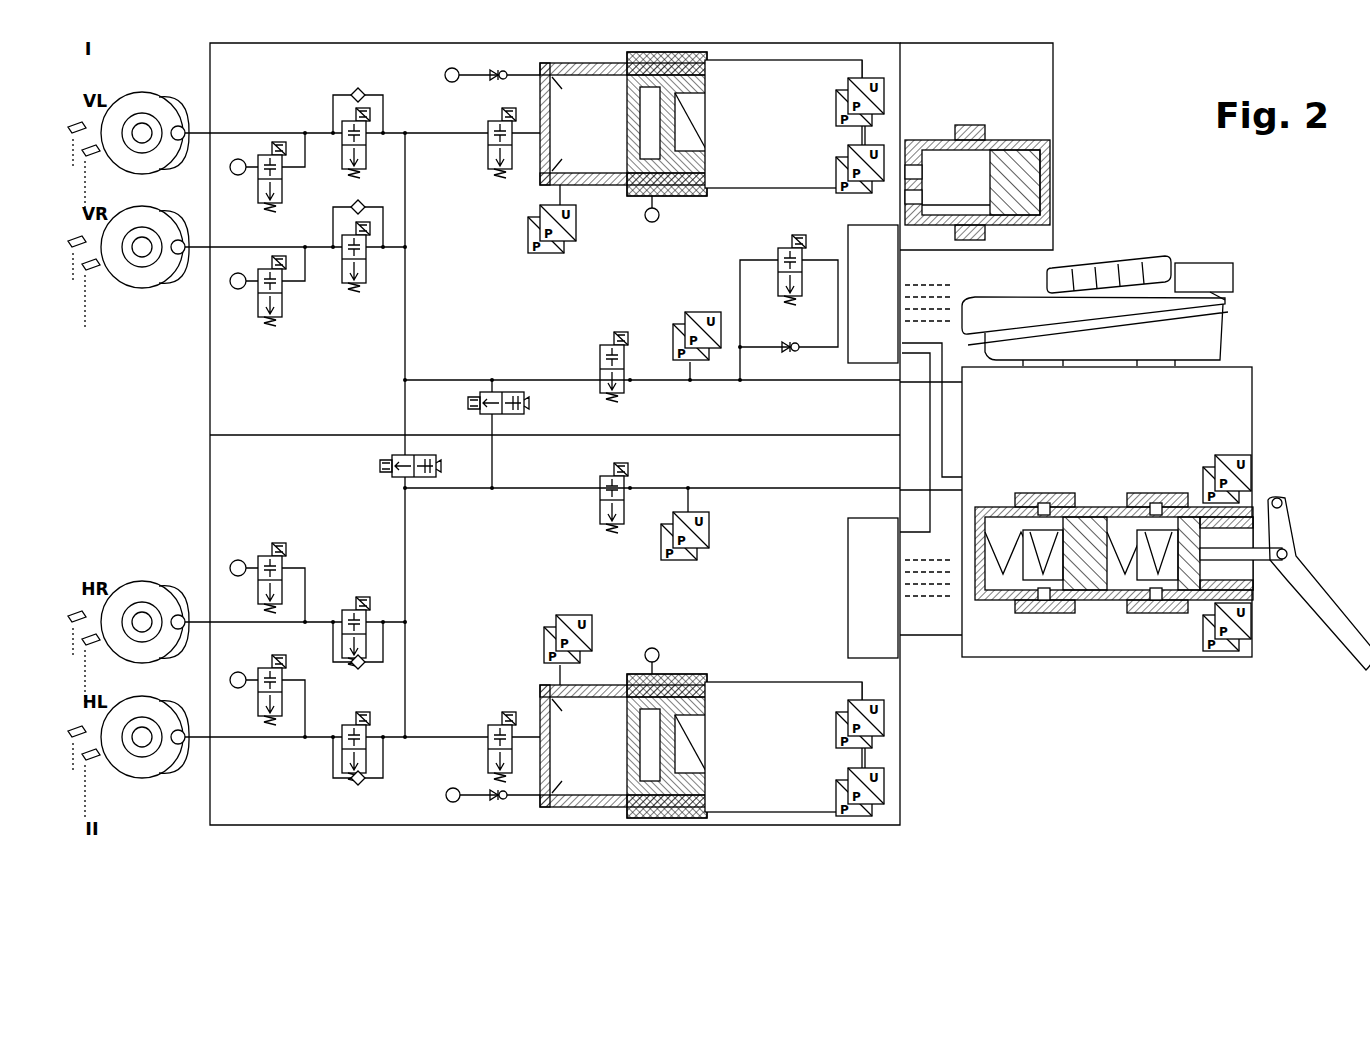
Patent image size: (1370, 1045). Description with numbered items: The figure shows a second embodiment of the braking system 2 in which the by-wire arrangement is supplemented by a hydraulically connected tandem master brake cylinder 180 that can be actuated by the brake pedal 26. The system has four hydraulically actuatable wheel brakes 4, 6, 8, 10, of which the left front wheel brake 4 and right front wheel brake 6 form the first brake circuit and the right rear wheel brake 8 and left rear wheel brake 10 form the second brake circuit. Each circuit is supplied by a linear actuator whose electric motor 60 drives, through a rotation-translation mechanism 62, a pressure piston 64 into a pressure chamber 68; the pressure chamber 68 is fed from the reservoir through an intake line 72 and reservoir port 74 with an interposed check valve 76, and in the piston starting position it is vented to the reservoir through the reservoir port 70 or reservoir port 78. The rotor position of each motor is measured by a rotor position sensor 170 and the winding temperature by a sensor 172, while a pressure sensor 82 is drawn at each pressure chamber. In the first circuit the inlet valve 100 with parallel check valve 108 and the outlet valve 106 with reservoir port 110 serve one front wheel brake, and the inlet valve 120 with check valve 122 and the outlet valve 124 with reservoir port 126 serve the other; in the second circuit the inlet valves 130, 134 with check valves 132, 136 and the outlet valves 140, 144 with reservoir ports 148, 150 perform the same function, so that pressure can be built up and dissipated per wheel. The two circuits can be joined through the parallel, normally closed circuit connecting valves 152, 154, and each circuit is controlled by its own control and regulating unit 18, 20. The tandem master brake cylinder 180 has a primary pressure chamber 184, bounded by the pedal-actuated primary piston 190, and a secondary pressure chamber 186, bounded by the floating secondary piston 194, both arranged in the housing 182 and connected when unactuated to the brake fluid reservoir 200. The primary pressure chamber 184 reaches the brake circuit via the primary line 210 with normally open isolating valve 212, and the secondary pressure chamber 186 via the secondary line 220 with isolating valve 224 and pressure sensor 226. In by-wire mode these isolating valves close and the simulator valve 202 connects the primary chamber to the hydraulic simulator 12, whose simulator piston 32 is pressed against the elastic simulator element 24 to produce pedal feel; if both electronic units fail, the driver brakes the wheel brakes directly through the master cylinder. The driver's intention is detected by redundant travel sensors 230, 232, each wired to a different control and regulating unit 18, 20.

The braking system 2 is at (1100, 103).
The wheel brake 4 is at (166, 110).
The wheel brake 6 is at (170, 275).
The wheel brake 8 is at (172, 592).
The wheel brake 10 is at (172, 765).
The simulator 12 is at (980, 116).
The control and regulating unit 18 is at (890, 268).
The control and regulating unit 20 is at (892, 656).
The simulator element 24 is at (1050, 170).
The brake pedal 26 is at (1325, 622).
The simulator piston 32 is at (990, 162).
The electric motor 60 is at (773, 797).
The rotation-translation mechanism 62 is at (690, 680).
The pressure piston 64 is at (690, 790).
The pressure chamber 68 is at (592, 785).
The reservoir port 70 is at (658, 221).
The intake line 72 is at (470, 800).
The reservoir port 74 is at (452, 802).
The check valve 76 is at (497, 800).
The reservoir port 78 is at (648, 648).
The pressure sensor 82 is at (572, 615).
The inlet valve 100 is at (370, 150).
The outlet valve 106 is at (275, 160).
The check valve 108 is at (358, 88).
The reservoir port 110 is at (238, 158).
The inlet valve 120 is at (370, 264).
The check valve 122 is at (367, 207).
The outlet valve 124 is at (278, 305).
The reservoir port 126 is at (238, 292).
The inlet valve 130 is at (370, 610).
The check valve 132 is at (367, 662).
The inlet valve 134 is at (370, 722).
The check valve 136 is at (355, 787).
The outlet valve 140 is at (290, 565).
The outlet valve 144 is at (272, 730).
The reservoir port 148 is at (238, 560).
The reservoir port 150 is at (238, 690).
The circuit connecting valve 152 is at (400, 478).
The circuit connecting valve 154 is at (505, 392).
The rotor position sensor 170 is at (886, 720).
The sensor 172 is at (886, 785).
The tandem master brake cylinder 180 is at (1185, 662).
The housing 182 is at (1240, 388).
The primary pressure chamber 184 is at (1112, 603).
The secondary pressure chamber 186 is at (1005, 605).
The primary piston 190 is at (1178, 603).
The secondary piston 194 is at (1082, 603).
The brake fluid reservoir 200 is at (1130, 300).
The simulator valve 202 is at (778, 262).
The primary line 210 is at (823, 385).
The isolating valve 212 is at (605, 352).
The secondary line 220 is at (787, 492).
The isolating valve 224 is at (600, 510).
The pressure sensor 226 is at (710, 548).
The travel sensor 230 is at (1252, 478).
The travel sensor 232 is at (1252, 648).